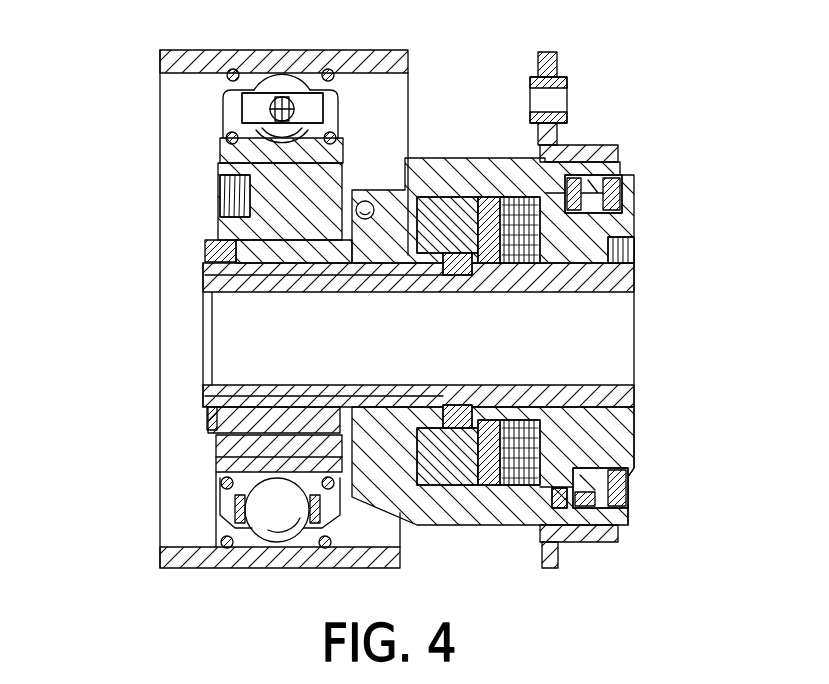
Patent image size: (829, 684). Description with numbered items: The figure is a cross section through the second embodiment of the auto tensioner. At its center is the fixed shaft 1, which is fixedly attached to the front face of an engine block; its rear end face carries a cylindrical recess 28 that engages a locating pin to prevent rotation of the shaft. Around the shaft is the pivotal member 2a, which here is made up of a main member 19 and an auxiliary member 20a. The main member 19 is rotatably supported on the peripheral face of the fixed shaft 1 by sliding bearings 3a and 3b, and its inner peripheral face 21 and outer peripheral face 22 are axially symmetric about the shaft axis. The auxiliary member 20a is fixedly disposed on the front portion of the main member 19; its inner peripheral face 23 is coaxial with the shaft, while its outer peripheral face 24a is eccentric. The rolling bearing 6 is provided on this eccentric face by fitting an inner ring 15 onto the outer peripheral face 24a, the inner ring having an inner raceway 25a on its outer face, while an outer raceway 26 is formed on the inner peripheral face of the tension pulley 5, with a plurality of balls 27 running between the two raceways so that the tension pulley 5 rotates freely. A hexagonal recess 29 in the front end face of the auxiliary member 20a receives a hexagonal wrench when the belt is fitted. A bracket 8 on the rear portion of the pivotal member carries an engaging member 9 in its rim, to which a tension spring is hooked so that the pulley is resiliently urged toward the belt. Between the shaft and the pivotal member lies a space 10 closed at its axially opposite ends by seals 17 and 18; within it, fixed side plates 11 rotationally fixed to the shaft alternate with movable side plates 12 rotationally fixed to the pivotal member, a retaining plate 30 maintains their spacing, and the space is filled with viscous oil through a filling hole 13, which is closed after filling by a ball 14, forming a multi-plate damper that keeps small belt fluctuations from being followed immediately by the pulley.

The fixed shaft 1 is at (625, 418).
The pivotal member 2a is at (443, 510).
The sliding bearing 3a is at (208, 418).
The sliding bearing 3b is at (598, 148).
The tension pulley 5 is at (398, 55).
The rolling bearing 6 is at (308, 95).
The bracket 8 is at (556, 70).
The engaging member 9 is at (564, 100).
The space 10 is at (488, 470).
The fixed side plates 11 is at (526, 432).
The movable side plates 12 is at (514, 200).
The filling hole 13 is at (402, 256).
The bore 14 is at (368, 204).
The inner ring 15 is at (218, 150).
The seal 17 is at (612, 196).
The seal 18 is at (456, 252).
The main member 19 is at (225, 258).
The auxiliary member 20a is at (217, 447).
The inner peripheral face 21 is at (280, 395).
The outer peripheral face 22 is at (245, 482).
The inner peripheral face 23 is at (225, 248).
The outer peripheral face 24a is at (240, 465).
The inner raceway 25a is at (268, 130).
The outer raceway 26 is at (284, 90).
The balls 27 is at (271, 90).
The cylindrical recess 28 is at (636, 258).
The hexagonal recess 29 is at (225, 204).
The retaining plate 30 is at (457, 505).